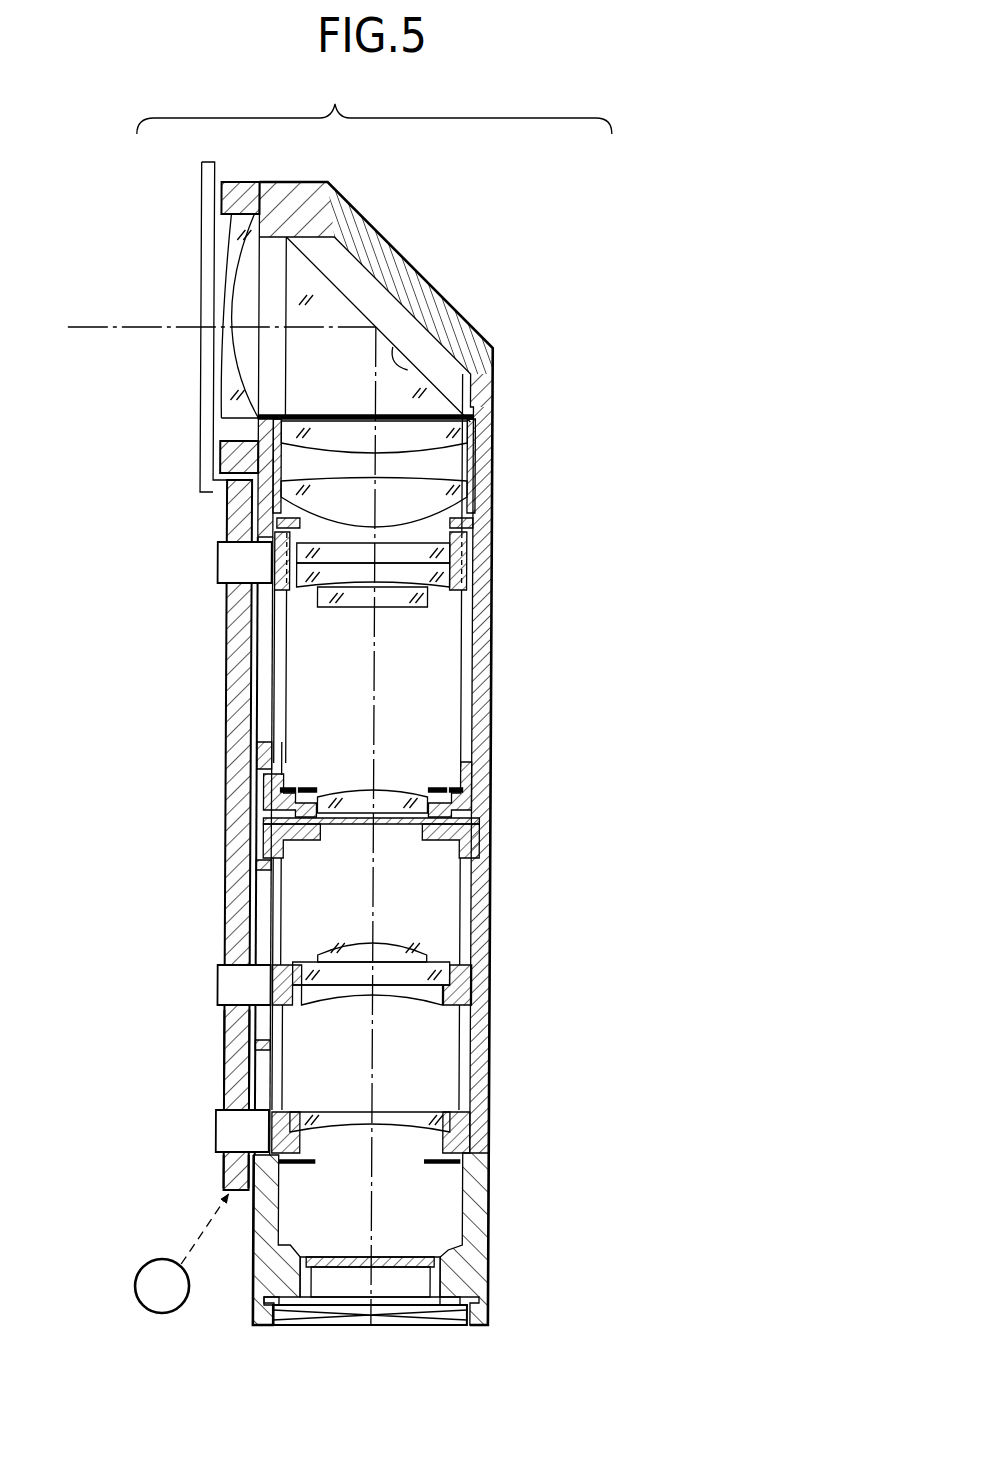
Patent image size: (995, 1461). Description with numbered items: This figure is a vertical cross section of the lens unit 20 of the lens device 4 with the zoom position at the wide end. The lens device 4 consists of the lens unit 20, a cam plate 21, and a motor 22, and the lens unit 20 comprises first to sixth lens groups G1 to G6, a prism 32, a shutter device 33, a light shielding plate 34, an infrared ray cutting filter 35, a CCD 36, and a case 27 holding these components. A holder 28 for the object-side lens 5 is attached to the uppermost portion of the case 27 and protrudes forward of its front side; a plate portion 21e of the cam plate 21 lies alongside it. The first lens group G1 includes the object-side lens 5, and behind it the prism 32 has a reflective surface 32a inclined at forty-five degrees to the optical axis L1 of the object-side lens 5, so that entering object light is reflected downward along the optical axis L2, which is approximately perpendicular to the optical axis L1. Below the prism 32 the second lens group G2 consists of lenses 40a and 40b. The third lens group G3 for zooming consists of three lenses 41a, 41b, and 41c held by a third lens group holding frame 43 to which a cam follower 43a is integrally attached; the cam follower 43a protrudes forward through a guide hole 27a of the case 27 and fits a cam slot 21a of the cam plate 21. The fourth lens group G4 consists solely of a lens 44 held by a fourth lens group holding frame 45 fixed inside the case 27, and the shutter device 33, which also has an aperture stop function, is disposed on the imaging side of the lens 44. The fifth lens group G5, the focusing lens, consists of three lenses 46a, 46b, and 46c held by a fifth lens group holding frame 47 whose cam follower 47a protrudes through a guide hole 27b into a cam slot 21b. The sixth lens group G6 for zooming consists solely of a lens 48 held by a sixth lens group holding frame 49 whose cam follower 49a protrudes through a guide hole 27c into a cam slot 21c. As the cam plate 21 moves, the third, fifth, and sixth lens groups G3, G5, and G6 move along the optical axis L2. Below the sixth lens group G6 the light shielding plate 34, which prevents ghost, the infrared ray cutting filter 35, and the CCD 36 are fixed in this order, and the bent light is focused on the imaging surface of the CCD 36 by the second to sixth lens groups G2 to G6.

The lens device 4 is at (374, 104).
The object-side lens 5 is at (231, 347).
The lens unit 20 is at (351, 731).
The cam plate 21 is at (161, 835).
The cam slot 21a is at (226, 527).
The cam slot 21b is at (226, 1017).
The cam slot 21c is at (226, 1102).
The support plate 21e is at (200, 283).
The motor 22 is at (139, 1286).
The case 27 is at (351, 753).
The guide hole 27a is at (258, 727).
The guide hole 27b is at (258, 893).
The guide hole 27c is at (258, 1048).
The holder 28 is at (245, 182).
The prism 32 is at (423, 324).
The reflective surface 32a is at (400, 354).
The shutter device 33 is at (492, 834).
The light shielding plate 34 is at (464, 1187).
The infrared ray cutting filter 35 is at (380, 1257).
The CCD image sensor 36 is at (454, 1318).
The lens 40a is at (475, 428).
The lens 40b is at (475, 497).
The lens 41a is at (470, 547).
The lens 41b is at (452, 586).
The lens 41c is at (422, 608).
The third lens group holding frame 43 is at (291, 594).
The cam follower 43a is at (218, 562).
The lens 44 is at (328, 791).
The fourth lens group holding frame 45 is at (264, 815).
The lens 46a is at (406, 943).
The lens 46b is at (452, 978).
The lens 46c is at (429, 996).
The fifth lens group holding frame 47 is at (294, 963).
The cam follower 47a is at (220, 980).
The lens 48 is at (390, 1110).
The sixth lens group holding frame 49 is at (289, 1108).
The cam follower 49a is at (219, 1130).
The first lens group G1 is at (169, 333).
The second lens group G2 is at (451, 475).
The third lens group G3 is at (477, 601).
The fourth lens group G4 is at (403, 790).
The fifth lens group G5 is at (455, 957).
The sixth lens group G6 is at (424, 1107).
The optical axis L1 is at (90, 325).
The optical axis L2 is at (383, 690).